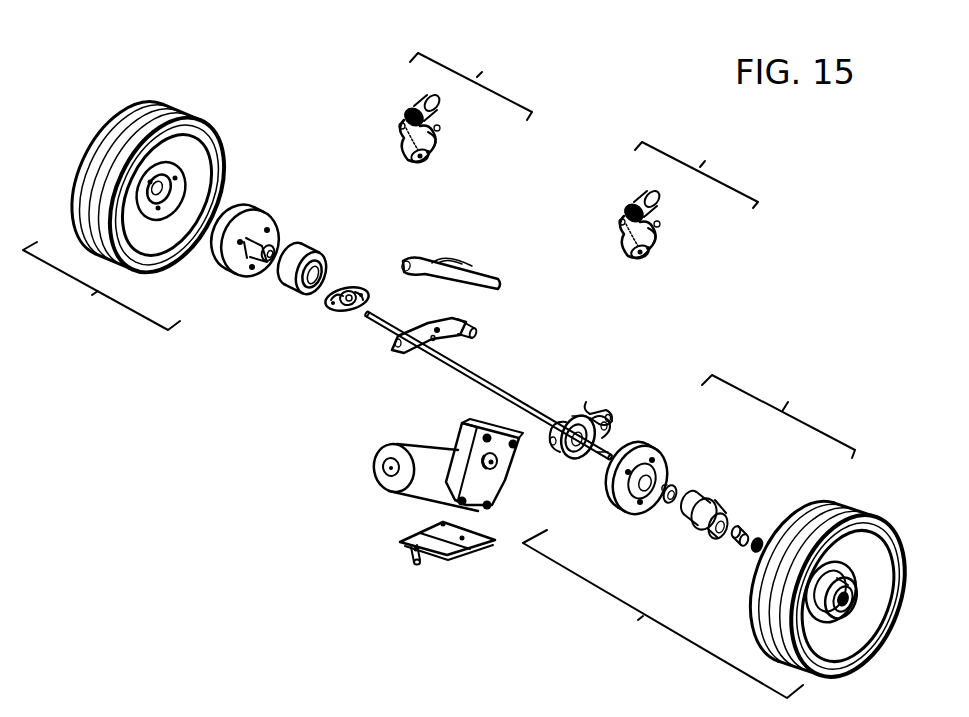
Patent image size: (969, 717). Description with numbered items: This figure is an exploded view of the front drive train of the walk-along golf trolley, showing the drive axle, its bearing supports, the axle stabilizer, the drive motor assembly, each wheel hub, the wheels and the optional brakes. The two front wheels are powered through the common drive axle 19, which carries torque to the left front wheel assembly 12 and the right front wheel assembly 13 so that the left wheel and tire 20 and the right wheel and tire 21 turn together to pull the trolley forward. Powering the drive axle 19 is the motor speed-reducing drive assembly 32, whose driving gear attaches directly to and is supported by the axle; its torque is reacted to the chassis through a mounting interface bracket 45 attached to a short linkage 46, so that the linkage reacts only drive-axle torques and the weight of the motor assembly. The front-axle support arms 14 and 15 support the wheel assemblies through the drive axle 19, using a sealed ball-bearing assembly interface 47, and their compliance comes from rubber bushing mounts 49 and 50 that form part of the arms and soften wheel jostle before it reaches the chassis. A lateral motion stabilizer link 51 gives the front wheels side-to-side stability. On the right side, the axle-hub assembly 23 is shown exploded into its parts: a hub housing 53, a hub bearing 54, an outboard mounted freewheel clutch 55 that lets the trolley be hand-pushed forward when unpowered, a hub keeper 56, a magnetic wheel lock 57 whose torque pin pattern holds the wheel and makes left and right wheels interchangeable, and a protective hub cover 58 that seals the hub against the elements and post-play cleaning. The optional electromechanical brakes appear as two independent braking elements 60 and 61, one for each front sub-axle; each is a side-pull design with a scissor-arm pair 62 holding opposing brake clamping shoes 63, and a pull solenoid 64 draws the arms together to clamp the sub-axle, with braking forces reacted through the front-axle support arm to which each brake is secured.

The left tire/drive-wheel 20 is at (190, 92).
The left front wheel assembly 12 is at (101, 286).
The protective hub cover 58 is at (320, 250).
The sealed ball-bearing assembly interface 47 is at (328, 312).
The lateral motion stabilizer link 51 is at (455, 255).
The front-axle support arm 15 is at (403, 352).
The rubber bushing mount 49 is at (474, 323).
The drive axle 19 is at (479, 372).
The rubber bushing mount 50 is at (590, 400).
The front-axle support arm 14 is at (600, 427).
The magnetic wheel lock 57 is at (662, 455).
The hub bearing 54 is at (673, 485).
The hub housing 53 is at (708, 502).
The freewheel clutch 55 is at (742, 530).
The hub keeper 56 is at (757, 538).
The right tire/drive-wheel 21 is at (857, 507).
The right axle-hub assembly 23 is at (778, 416).
The right front wheel assembly 13 is at (663, 614).
The motor speed-reducing drive assembly 32 is at (493, 488).
The mounting interface bracket 45 is at (460, 548).
The short linkage 46 is at (412, 562).
The braking element 60 is at (471, 86).
The pull solenoid 64 is at (422, 105).
The scissor-arm pair 62 is at (407, 162).
The brake clamping shoes 63 is at (430, 148).
The braking element 61 is at (696, 175).